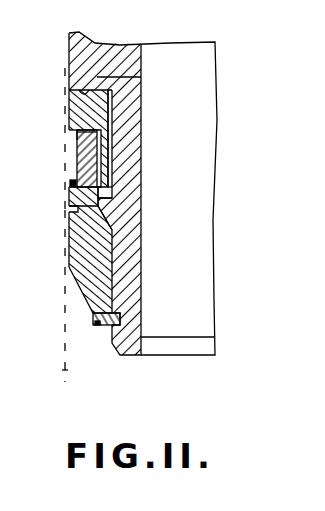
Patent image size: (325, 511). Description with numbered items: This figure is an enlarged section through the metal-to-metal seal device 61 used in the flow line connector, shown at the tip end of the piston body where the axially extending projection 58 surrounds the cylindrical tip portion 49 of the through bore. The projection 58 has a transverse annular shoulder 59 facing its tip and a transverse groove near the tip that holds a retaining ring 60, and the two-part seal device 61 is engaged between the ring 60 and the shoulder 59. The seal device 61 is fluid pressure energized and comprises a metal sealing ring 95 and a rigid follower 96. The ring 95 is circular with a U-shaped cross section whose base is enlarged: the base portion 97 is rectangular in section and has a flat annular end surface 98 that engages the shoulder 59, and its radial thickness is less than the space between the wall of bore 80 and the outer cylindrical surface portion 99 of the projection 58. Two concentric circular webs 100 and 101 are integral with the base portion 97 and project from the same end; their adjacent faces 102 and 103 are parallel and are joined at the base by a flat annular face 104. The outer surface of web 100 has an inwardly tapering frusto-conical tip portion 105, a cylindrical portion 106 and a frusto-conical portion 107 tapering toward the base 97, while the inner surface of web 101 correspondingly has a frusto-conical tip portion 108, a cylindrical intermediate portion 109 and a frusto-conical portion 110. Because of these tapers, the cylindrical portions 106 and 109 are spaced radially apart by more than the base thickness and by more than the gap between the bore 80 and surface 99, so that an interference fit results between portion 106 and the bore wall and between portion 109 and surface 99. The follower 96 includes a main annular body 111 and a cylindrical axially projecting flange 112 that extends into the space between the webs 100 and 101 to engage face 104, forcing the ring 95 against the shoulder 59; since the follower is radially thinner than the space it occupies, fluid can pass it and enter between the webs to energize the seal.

The cylindrical tip portion 49 is at (141, 285).
The axially extending projection 58 is at (107, 45).
The transverse annular shoulder 59 is at (80, 89).
The retaining ring 60 is at (92, 328).
The metal-to-metal annular seal device 61 is at (58, 203).
The bore 80 is at (71, 370).
The metal sealing ring 95 is at (69, 113).
The rigid follower 96 is at (81, 278).
The base portion 97 is at (80, 105).
The flat annular end surface 98 is at (142, 76).
The outer cylindrical surface portion 99 is at (112, 108).
The outer circular web 100 is at (68, 186).
The inner circular web 101 is at (113, 150).
The web face 102 is at (70, 205).
The web face 103 is at (107, 198).
The flat annular face 104 is at (69, 132).
The frusto-conical tip portion 105 is at (68, 181).
The cylindrical portion 106 is at (68, 165).
The frusto-conical portion 107 is at (76, 143).
The frusto-conical tip portion 108 is at (112, 188).
The cylindrical intermediate portion 109 is at (113, 170).
The frusto-conical portion 110 is at (142, 127).
The main annular body 111 is at (68, 240).
The cylindrical axially projecting flange 112 is at (85, 157).